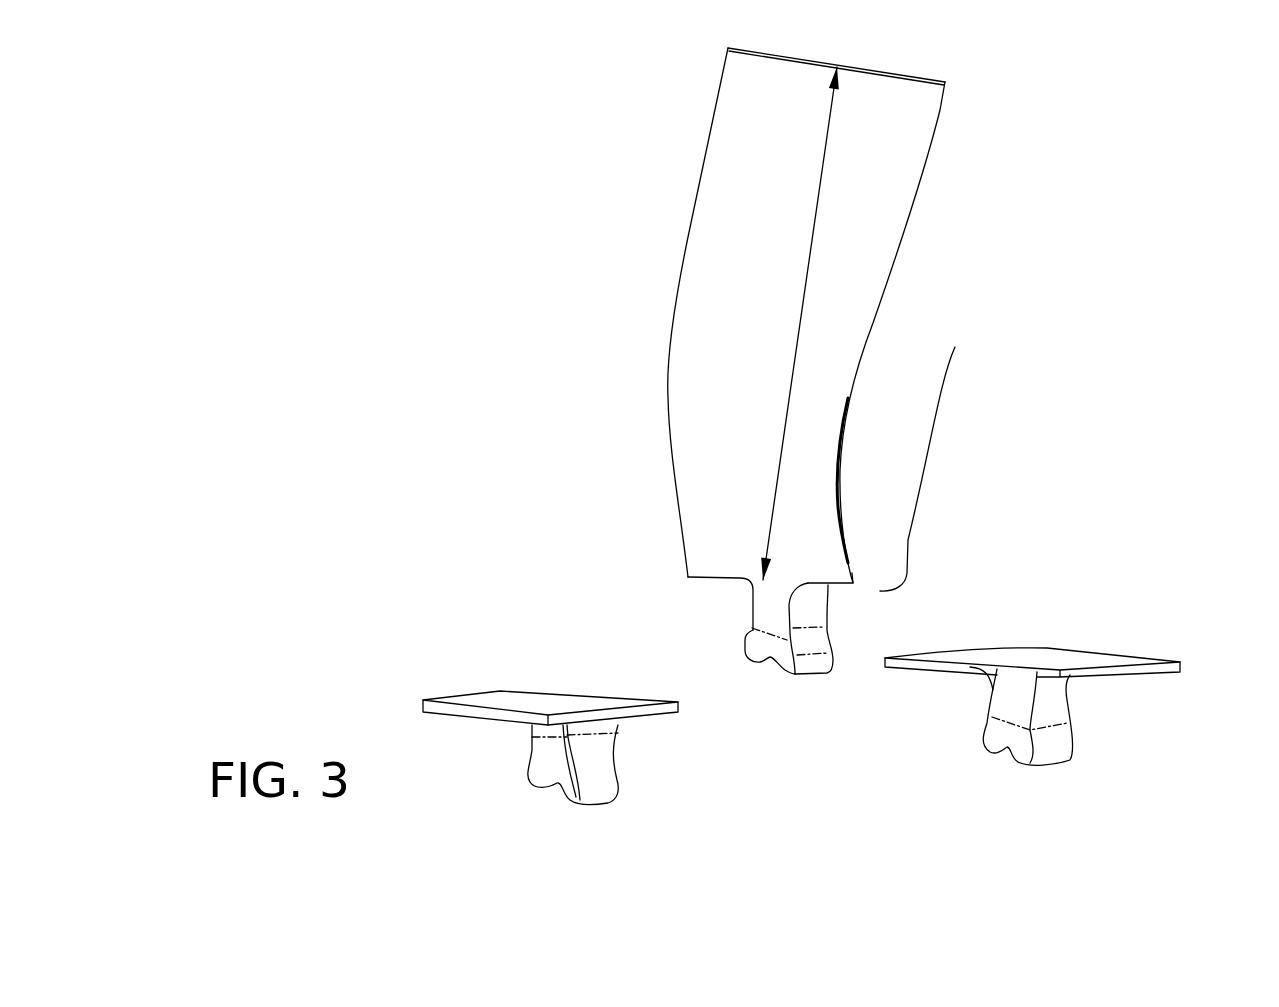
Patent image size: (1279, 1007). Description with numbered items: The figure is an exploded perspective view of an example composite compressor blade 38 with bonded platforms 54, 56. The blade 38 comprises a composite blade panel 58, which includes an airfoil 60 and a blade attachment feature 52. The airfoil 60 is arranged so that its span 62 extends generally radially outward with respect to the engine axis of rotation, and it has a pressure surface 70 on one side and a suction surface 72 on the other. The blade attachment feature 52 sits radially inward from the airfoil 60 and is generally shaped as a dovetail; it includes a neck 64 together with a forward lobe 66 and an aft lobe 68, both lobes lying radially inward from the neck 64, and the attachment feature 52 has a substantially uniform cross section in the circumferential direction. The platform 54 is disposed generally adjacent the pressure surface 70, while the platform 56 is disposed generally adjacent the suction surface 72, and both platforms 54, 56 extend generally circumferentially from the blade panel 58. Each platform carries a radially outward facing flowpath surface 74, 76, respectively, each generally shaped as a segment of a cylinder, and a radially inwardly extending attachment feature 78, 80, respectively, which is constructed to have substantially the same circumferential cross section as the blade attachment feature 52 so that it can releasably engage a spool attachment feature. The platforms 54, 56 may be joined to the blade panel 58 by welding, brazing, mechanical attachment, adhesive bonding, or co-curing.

The composite compressor blade 38 is at (547, 150).
The blade attachment feature 52 is at (713, 657).
The platform 54 is at (436, 698).
The platform 56 is at (1145, 655).
The composite blade panel 58 is at (688, 237).
The airfoil 60 is at (972, 85).
The span 62 is at (802, 307).
The neck 64 is at (808, 605).
The forward lobe 66 is at (810, 650).
The aft lobe 68 is at (745, 632).
The pressure surface 70 is at (705, 337).
The suction surface 72 is at (858, 405).
The flowpath surface 74 is at (497, 703).
The flowpath surface 76 is at (1045, 655).
The attachment feature 78 is at (595, 773).
The attachment feature 80 is at (1048, 740).